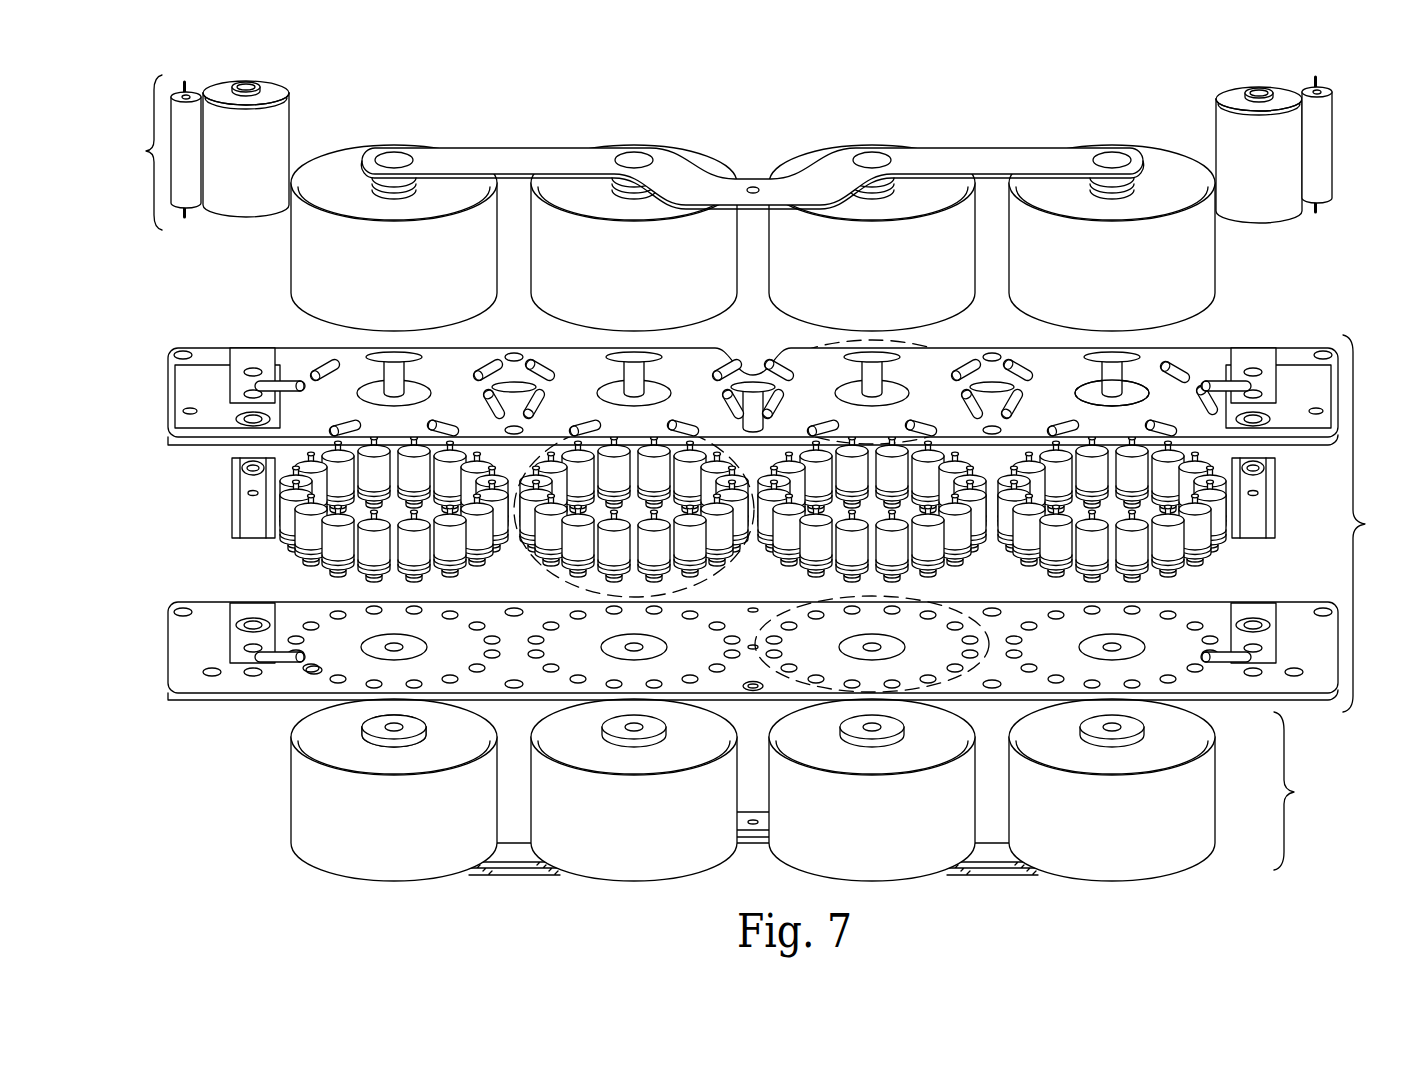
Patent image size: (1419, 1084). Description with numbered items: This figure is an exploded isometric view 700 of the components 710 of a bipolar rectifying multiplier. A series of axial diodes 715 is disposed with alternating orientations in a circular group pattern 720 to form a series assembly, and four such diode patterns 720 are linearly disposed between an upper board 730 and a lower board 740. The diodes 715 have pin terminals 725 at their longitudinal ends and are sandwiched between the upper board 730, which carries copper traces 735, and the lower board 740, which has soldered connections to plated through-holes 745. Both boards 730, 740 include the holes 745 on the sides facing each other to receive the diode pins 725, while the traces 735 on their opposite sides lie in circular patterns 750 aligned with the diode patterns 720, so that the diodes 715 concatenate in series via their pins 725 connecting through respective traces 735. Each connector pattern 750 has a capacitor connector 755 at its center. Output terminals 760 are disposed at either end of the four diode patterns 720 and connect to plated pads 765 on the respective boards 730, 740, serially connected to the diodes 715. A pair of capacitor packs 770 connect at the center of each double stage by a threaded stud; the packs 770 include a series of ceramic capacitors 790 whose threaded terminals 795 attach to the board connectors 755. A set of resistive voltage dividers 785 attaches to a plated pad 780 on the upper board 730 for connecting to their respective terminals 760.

The exploded isometric view 700 is at (1119, 91).
The components 710 is at (1088, 523).
The axial diodes 715 is at (482, 568).
The circular group pattern 720 is at (740, 575).
The pin terminals 725 is at (1190, 570).
The upper board 730 is at (212, 347).
The copper traces 735 is at (318, 368).
The lower board 740 is at (232, 700).
The plated through-holes 745 is at (312, 674).
The circular patterns 750 is at (800, 345).
The capacitor connector 755 is at (1140, 392).
The output terminals 760 is at (236, 507).
The plated pads 765 is at (236, 640).
The capacitor packs 770 is at (1309, 791).
The plated pad 780 is at (172, 414).
The resistive voltage dividers 785 is at (715, 152).
The ceramic capacitors 790 is at (295, 836).
The threaded terminals 795 is at (375, 725).